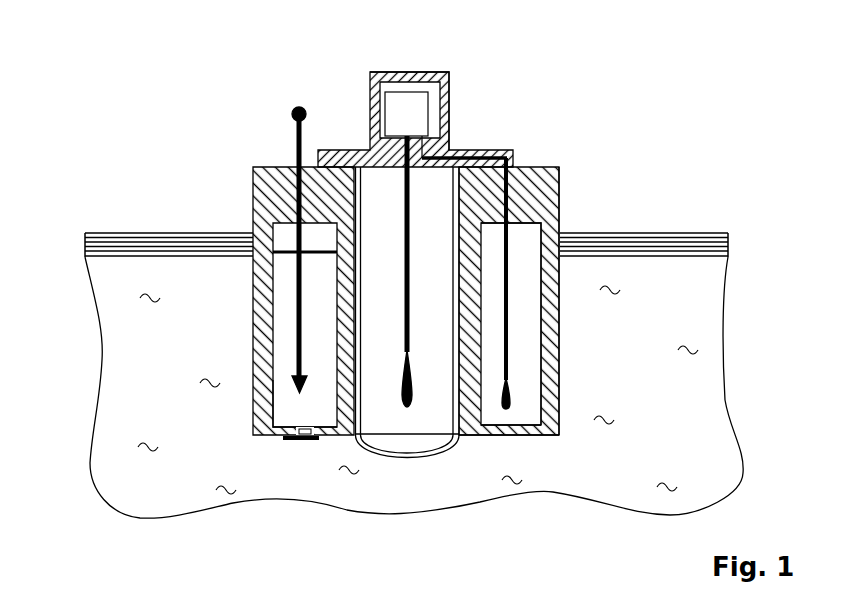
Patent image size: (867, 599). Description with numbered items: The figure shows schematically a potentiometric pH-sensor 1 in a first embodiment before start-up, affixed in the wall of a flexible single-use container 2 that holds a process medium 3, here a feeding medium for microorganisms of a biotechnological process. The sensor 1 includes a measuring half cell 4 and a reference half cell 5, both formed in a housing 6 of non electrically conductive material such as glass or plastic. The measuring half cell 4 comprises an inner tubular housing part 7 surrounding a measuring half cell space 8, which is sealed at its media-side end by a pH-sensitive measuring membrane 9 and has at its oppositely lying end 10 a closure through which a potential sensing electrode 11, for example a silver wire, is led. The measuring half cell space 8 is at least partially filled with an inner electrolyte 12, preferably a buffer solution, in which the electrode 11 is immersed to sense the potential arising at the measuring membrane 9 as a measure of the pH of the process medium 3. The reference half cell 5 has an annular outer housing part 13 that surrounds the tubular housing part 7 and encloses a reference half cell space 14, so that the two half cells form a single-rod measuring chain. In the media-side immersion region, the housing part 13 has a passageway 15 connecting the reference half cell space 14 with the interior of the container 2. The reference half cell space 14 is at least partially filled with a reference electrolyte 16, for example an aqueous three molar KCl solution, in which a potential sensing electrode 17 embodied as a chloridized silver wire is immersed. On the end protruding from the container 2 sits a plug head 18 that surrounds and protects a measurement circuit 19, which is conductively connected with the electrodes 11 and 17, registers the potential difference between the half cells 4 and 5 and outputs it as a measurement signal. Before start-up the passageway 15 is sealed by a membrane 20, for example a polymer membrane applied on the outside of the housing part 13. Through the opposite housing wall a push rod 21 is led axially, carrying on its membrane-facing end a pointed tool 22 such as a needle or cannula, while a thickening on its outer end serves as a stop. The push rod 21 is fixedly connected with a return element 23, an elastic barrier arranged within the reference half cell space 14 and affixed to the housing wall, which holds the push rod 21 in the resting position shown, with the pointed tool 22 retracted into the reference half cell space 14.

The potentiometric pH-sensor 1 is at (407, 306).
The single-use container 2 is at (637, 233).
The process medium 3 is at (708, 293).
The measuring half cell 4 is at (433, 193).
The reference half cell 5 is at (518, 255).
The housing 6 is at (553, 435).
The tubular housing part 7 is at (485, 158).
The measuring half cell space 8 is at (370, 203).
The measuring membrane 9 is at (408, 440).
The oppositely lying end 10 is at (368, 128).
The potential sensing electrode 11 is at (405, 357).
The inner electrolyte 12 is at (413, 458).
The outer housing part 13 is at (560, 395).
The reference half cell space 14 is at (498, 417).
The passageway 15 is at (298, 438).
The reference electrolyte 16 is at (292, 337).
The potential sensing electrode 17 is at (513, 342).
The plug head 18 is at (449, 92).
The measurement circuit 19 is at (405, 98).
The membrane 20 is at (307, 440).
The push rod 21 is at (297, 145).
The pointed tool 22 is at (283, 385).
The return element 23 is at (266, 222).